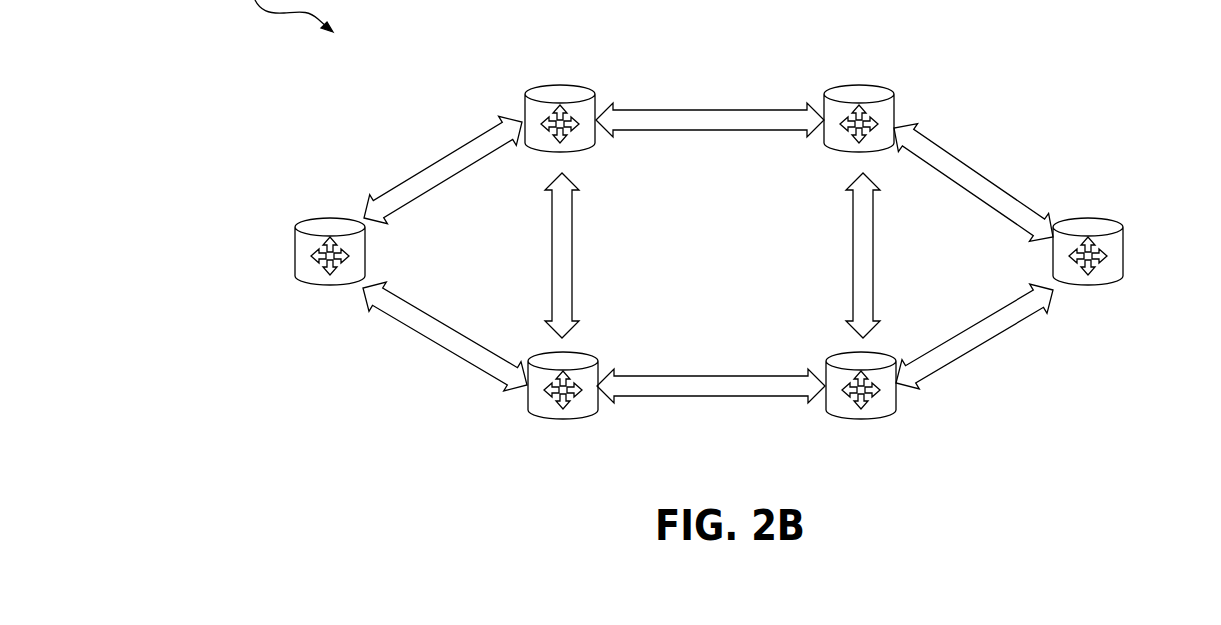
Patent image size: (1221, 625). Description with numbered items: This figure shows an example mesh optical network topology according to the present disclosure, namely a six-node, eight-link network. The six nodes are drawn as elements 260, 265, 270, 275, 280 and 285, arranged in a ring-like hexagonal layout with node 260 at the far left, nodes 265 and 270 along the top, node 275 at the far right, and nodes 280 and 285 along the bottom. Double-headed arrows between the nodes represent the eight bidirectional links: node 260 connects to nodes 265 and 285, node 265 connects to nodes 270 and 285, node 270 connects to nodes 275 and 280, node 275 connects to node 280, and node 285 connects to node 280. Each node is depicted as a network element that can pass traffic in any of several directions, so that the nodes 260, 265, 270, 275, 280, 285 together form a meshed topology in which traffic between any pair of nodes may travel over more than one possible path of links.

The network node 260 is at (293, 220).
The network node 265 is at (524, 88).
The network node 270 is at (822, 88).
The network node 275 is at (1124, 222).
The network node 280 is at (897, 420).
The network node 285 is at (528, 420).